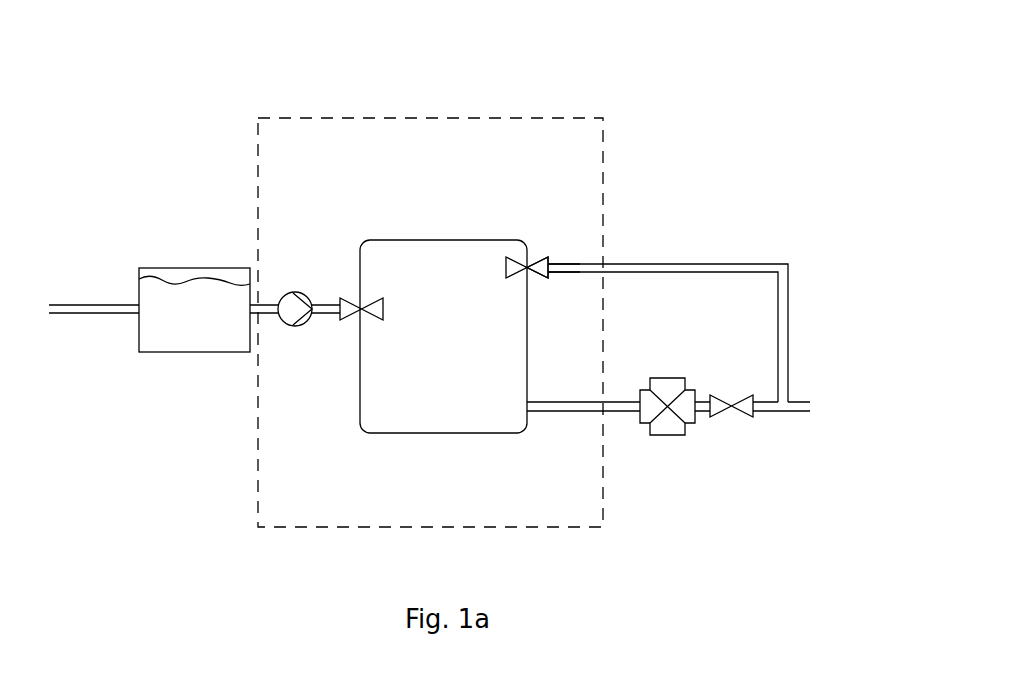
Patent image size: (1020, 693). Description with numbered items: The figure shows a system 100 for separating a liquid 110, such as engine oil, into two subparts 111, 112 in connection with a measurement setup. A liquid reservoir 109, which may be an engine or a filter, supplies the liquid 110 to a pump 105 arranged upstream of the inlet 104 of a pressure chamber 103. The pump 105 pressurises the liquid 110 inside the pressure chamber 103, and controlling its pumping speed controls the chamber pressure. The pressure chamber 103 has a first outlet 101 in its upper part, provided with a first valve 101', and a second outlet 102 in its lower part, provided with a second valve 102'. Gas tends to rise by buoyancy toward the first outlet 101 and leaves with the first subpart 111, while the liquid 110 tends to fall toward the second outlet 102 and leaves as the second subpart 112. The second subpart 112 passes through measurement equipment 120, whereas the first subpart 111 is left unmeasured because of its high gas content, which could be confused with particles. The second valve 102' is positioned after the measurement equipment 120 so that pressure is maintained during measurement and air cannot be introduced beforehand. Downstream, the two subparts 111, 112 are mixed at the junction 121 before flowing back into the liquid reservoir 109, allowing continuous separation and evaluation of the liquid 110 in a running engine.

The system 100 is at (383, 118).
The first outlet 101 is at (527, 224).
The first valve 101' is at (562, 238).
The second outlet 102 is at (511, 444).
The second valve 102' is at (727, 446).
The pressure chamber 103 is at (385, 238).
The inlet 104 is at (350, 300).
The pump 105 is at (287, 325).
The liquid reservoir 109 is at (172, 267).
The liquid 110 is at (175, 337).
The first subpart 111 is at (650, 267).
The second subpart 112 is at (618, 407).
The measurement equipment 120 is at (665, 437).
The junction 121 is at (787, 400).